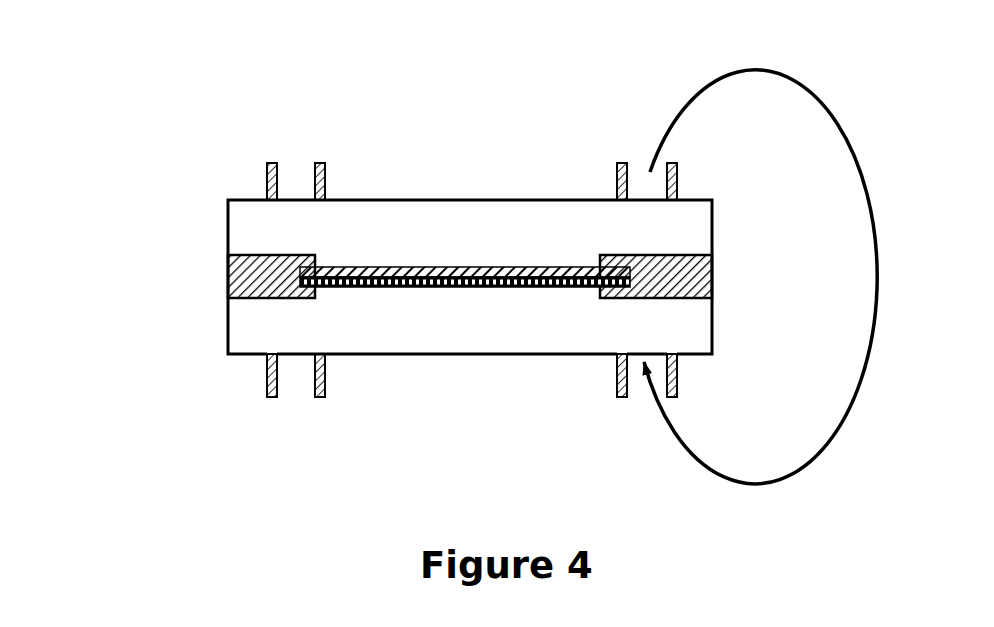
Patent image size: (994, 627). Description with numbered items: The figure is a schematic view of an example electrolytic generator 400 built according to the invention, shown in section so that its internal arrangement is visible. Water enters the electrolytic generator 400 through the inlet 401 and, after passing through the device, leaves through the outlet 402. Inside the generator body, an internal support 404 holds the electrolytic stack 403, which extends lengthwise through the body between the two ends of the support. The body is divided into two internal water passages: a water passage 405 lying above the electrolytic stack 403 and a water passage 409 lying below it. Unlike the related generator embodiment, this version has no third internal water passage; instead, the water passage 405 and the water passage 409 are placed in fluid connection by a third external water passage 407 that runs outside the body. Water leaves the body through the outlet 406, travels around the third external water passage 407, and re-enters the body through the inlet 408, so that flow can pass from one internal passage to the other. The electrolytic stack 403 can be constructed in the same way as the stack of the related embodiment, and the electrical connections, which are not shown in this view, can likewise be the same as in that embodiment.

The electrolytic generator 400 is at (207, 168).
The inlet 401 is at (297, 165).
The outlet 402 is at (298, 392).
The electrolytic stack 403 is at (543, 265).
The internal support 404 is at (230, 275).
The water passage 405 is at (409, 237).
The outlet 406 is at (636, 160).
The third external water passage 407 is at (808, 465).
The inlet 408 is at (635, 400).
The water passage 409 is at (468, 322).